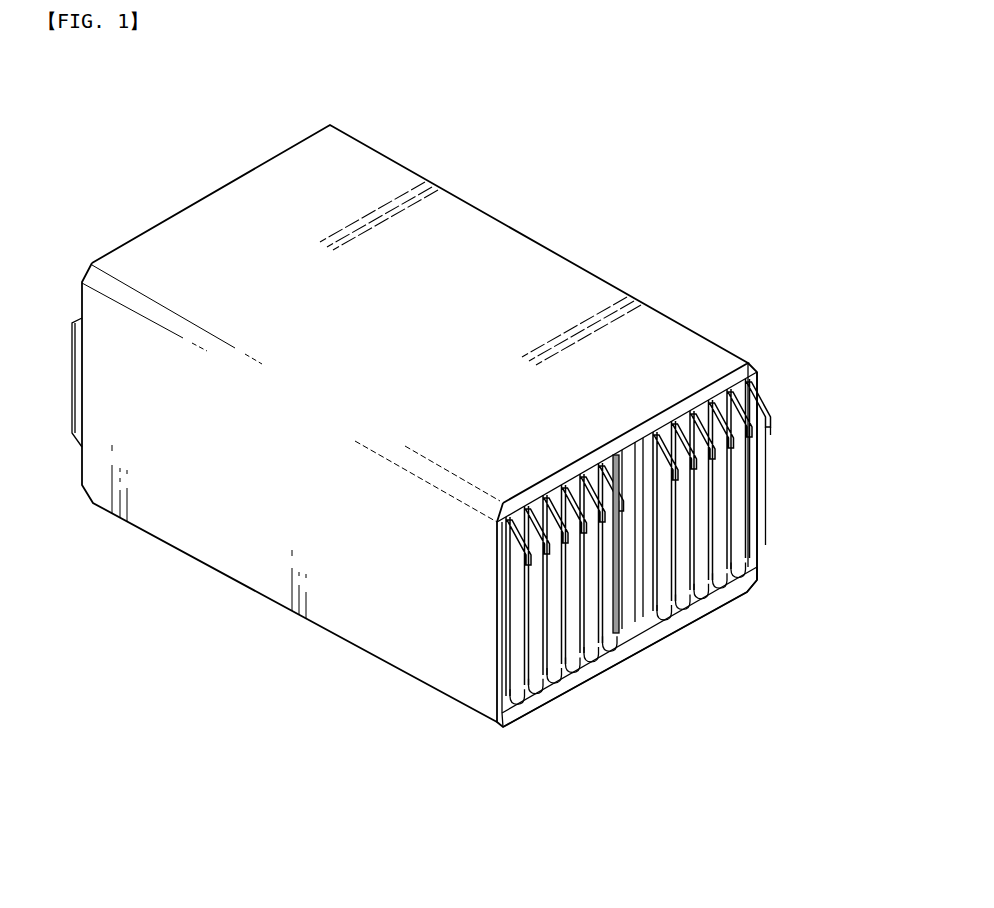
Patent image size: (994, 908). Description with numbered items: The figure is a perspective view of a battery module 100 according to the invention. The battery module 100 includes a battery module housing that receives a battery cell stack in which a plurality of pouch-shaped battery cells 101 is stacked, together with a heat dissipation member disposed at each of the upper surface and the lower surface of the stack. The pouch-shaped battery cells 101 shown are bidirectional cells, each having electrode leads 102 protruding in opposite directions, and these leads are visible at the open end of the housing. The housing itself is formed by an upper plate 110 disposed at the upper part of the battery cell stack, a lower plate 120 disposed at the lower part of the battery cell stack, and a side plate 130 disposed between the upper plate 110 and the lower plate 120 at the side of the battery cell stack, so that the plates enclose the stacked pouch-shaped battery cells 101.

The battery module 100 is at (94, 106).
The upper plate 110 is at (460, 228).
The side plate 130 is at (398, 612).
The lower plate 120 is at (660, 630).
The electrode leads 102 is at (600, 593).
The pouch-shaped battery cells 101 is at (567, 683).